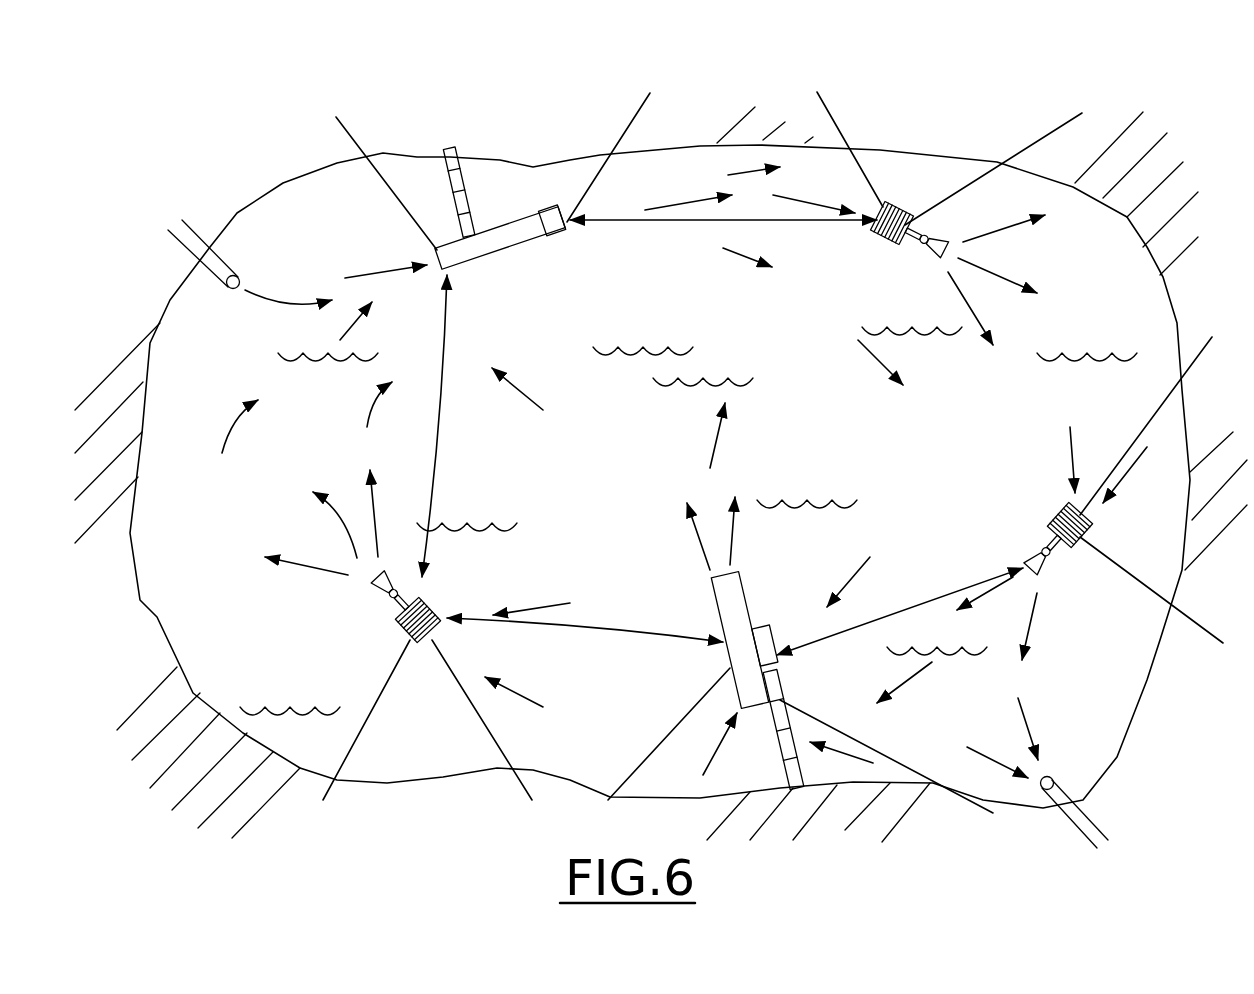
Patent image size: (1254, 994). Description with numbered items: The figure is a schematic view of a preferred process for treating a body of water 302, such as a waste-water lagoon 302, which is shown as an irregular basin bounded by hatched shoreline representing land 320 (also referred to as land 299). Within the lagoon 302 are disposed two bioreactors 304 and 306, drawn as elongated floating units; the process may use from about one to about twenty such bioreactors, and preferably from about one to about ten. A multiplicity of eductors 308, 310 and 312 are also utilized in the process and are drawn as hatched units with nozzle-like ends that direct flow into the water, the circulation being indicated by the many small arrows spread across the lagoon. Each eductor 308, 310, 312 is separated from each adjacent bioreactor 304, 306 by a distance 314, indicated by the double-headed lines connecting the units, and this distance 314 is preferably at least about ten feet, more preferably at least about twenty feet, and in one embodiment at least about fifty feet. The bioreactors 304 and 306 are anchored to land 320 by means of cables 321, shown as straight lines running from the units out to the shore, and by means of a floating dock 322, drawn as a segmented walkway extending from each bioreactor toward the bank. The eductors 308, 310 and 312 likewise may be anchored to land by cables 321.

The land 299 is at (760, 58).
The body of water 302 is at (867, 153).
The bioreactor 304 is at (541, 232).
The bioreactor 306 is at (740, 585).
The eductor 308 is at (432, 598).
The eductor 310 is at (901, 240).
The eductor 312 is at (1058, 512).
The distance 314 is at (677, 222).
The land 320 is at (452, 78).
The cables 321 is at (398, 197).
The floating dock 322 is at (478, 192).